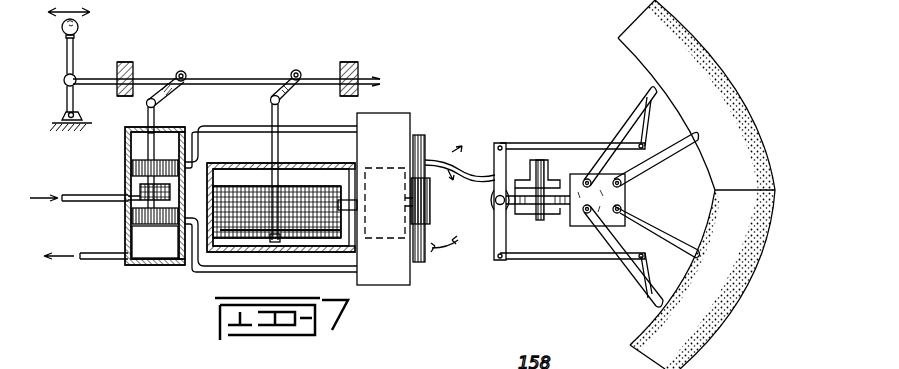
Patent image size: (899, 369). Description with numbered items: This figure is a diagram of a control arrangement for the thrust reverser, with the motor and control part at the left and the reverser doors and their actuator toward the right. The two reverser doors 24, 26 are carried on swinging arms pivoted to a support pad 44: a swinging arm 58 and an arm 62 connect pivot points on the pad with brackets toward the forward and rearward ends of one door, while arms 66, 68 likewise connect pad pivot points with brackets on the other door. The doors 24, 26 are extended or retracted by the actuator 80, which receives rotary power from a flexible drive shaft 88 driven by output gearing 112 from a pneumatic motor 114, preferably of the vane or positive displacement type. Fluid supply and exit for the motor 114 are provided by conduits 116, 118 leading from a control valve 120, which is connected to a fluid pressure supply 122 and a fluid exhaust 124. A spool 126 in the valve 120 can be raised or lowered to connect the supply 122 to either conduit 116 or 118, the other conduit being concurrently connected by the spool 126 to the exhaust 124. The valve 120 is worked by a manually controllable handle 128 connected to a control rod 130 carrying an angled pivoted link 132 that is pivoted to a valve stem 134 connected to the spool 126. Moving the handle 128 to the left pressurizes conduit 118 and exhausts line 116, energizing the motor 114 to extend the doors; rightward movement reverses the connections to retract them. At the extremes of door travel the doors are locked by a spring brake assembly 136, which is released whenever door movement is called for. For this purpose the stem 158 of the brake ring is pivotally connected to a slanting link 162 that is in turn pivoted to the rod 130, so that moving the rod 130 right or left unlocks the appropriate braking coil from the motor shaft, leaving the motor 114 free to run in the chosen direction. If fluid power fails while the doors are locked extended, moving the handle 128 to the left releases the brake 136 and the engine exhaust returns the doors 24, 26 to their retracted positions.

The reverser door 24 is at (712, 56).
The reverser door 26 is at (722, 314).
The support pad 44 is at (626, 196).
The swinging arm 58 is at (650, 292).
The arm 62 is at (686, 236).
The arm 66 is at (648, 104).
The arm 68 is at (680, 140).
The actuator 80 is at (545, 228).
The flexible drive shaft 88 is at (445, 148).
The output gearing 112 is at (440, 200).
The pneumatic motor 114 is at (417, 115).
The conduit 116 is at (282, 128).
The conduit 118 is at (280, 270).
The control valve 120 is at (174, 120).
The fluid pressure supply 122 is at (68, 200).
The fluid exhaust 124 is at (84, 243).
The spool 126 is at (147, 237).
The handle 128 is at (74, 48).
The control rod 130 is at (220, 62).
The angled pivoted link 132 is at (163, 70).
The valve stem 134 is at (150, 140).
The spring brake assembly 136 is at (222, 150).
The stem 158 is at (278, 153).
The slanting link 162 is at (288, 90).